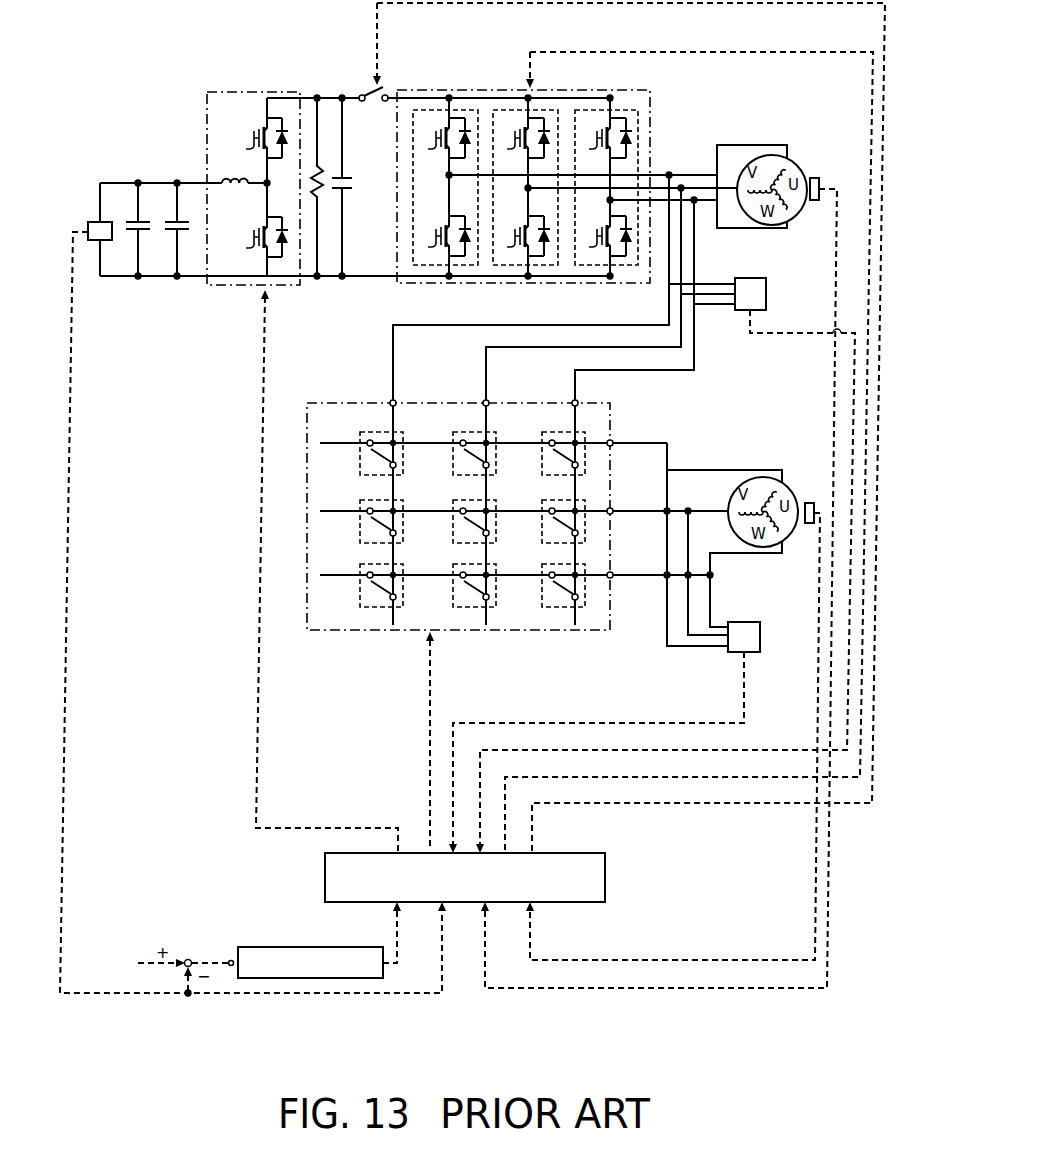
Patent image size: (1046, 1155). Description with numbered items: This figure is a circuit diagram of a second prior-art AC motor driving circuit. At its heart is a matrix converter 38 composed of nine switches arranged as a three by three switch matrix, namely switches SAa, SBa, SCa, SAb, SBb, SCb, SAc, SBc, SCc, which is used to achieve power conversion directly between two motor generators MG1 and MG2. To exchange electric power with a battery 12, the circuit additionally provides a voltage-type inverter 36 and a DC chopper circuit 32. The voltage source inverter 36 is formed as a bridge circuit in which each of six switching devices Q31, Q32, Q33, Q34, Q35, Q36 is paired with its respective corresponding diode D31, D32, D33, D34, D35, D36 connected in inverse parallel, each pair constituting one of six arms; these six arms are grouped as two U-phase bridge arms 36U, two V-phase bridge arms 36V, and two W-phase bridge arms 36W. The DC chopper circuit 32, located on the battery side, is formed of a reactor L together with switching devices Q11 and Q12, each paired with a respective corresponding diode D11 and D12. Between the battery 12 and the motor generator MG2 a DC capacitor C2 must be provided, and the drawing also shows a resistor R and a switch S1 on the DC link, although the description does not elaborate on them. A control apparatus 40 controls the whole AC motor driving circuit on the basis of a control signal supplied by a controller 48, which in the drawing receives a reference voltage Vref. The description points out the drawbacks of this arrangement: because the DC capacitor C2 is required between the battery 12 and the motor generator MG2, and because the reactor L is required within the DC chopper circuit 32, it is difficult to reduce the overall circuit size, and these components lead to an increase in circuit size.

The battery 12 is at (134, 258).
The DC chopper circuit 32 is at (205, 97).
The voltage-type inverter 36 is at (655, 93).
The U-phase bridge arms 36U is at (468, 110).
The V-phase bridge arms 36V is at (547, 110).
The W-phase bridge arms 36W is at (620, 110).
The matrix converter 38 is at (612, 410).
The control apparatus 40 is at (606, 877).
The controller 48 is at (332, 979).
The reactor L is at (223, 177).
The resistor R is at (308, 175).
The DC capacitor C2 is at (347, 193).
The switch S1 is at (374, 116).
The switching device Q11 is at (255, 124).
The diode D11 is at (287, 126).
The switching device Q12 is at (253, 248).
The diode D12 is at (287, 254).
The switching device Q31 is at (440, 126).
The diode D31 is at (462, 146).
The switching device Q32 is at (433, 252).
The diode D32 is at (462, 244).
The switching device Q33 is at (518, 126).
The diode D33 is at (542, 146).
The switching device Q34 is at (515, 252).
The diode D34 is at (542, 244).
The switching device Q35 is at (600, 126).
The diode D35 is at (627, 128).
The switching device Q36 is at (600, 252).
The diode D36 is at (628, 246).
The motor generator MG1 is at (749, 478).
The motor generator MG2 is at (754, 152).
The switch SAa is at (380, 433).
The switch SBa is at (473, 433).
The switch SCa is at (562, 433).
The switch SAb is at (380, 501).
The switch SBb is at (473, 501).
The switch SCb is at (562, 501).
The switch SAc is at (380, 566).
The switch SBc is at (473, 566).
The switch SCc is at (562, 566).
The voltage reference Vref is at (137, 965).